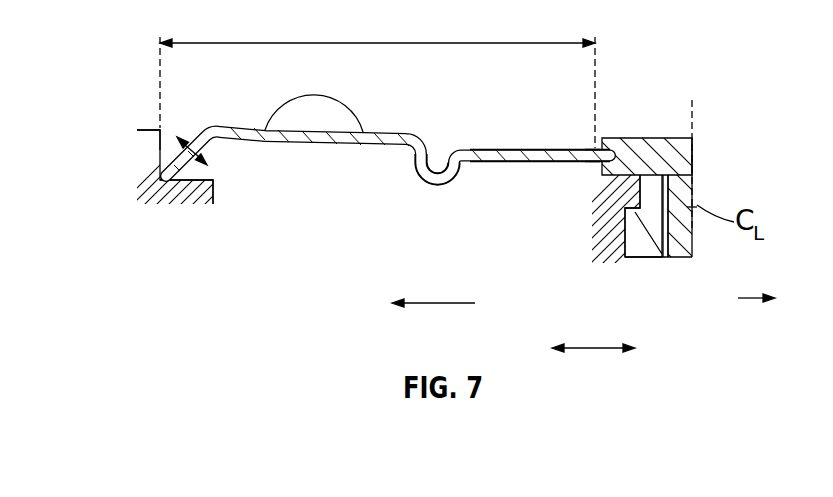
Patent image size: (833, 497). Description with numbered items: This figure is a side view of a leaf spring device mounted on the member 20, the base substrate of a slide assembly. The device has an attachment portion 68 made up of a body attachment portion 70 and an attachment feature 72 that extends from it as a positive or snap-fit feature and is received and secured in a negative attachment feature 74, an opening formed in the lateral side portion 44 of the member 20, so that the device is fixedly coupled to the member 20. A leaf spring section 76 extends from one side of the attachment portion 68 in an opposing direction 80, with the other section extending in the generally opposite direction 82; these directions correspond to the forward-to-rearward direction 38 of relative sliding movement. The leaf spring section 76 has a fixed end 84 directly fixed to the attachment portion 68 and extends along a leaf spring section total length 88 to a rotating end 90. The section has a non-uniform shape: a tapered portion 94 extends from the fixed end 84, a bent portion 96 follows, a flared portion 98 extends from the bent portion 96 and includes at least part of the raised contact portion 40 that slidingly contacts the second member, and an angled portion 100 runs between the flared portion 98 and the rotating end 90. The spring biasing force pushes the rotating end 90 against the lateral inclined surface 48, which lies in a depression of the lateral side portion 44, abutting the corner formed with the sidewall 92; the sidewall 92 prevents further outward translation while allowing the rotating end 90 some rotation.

The member 20 is at (190, 202).
The forward-to-rearward direction 38 is at (598, 350).
The raised contact portion 40 is at (340, 104).
The lateral side portion 44 is at (218, 192).
The lateral inclined surface 48 is at (211, 170).
The attachment portion 68 is at (647, 140).
The body attachment portion 70 is at (679, 138).
The attachment feature 72 is at (680, 246).
The negative attachment feature 74 is at (620, 232).
The leaf spring section 76 is at (342, 148).
The opposing direction 80 is at (432, 305).
The opposing direction 82 is at (757, 300).
The fixed end 84 is at (593, 150).
The leaf spring section total length 88 is at (388, 42).
The rotating end 90 is at (152, 162).
The sidewall 92 is at (153, 130).
The tapered portion 94 is at (530, 152).
The bent portion 96 is at (440, 183).
The flared portion 98 is at (322, 145).
The angled portion 100 is at (203, 132).